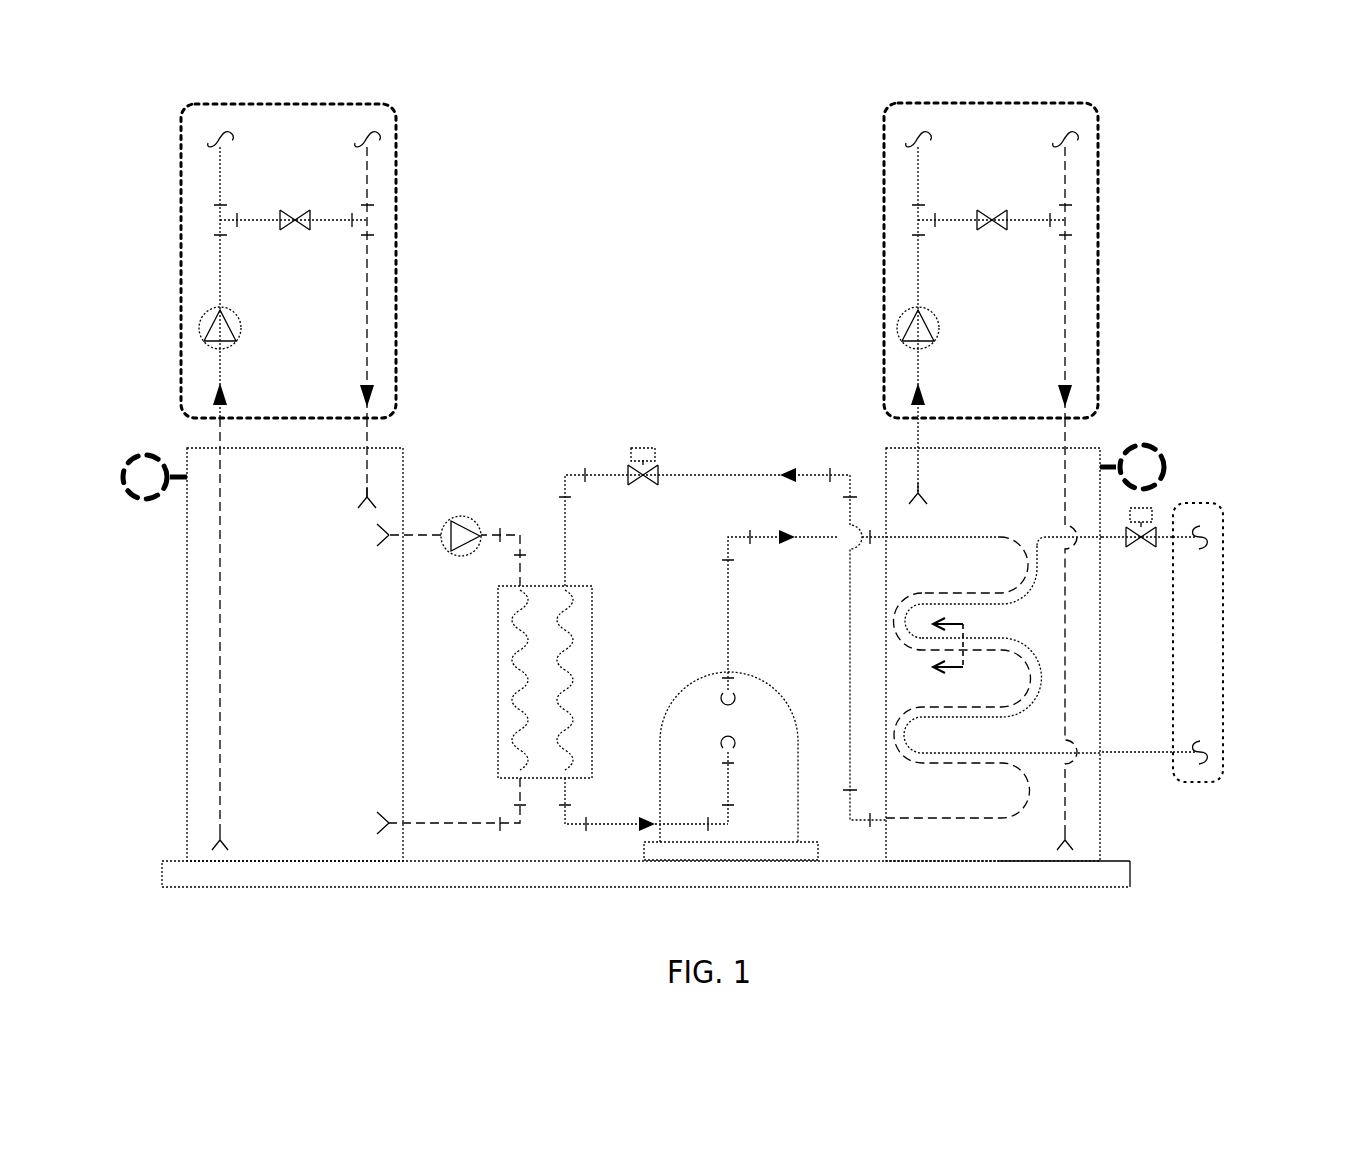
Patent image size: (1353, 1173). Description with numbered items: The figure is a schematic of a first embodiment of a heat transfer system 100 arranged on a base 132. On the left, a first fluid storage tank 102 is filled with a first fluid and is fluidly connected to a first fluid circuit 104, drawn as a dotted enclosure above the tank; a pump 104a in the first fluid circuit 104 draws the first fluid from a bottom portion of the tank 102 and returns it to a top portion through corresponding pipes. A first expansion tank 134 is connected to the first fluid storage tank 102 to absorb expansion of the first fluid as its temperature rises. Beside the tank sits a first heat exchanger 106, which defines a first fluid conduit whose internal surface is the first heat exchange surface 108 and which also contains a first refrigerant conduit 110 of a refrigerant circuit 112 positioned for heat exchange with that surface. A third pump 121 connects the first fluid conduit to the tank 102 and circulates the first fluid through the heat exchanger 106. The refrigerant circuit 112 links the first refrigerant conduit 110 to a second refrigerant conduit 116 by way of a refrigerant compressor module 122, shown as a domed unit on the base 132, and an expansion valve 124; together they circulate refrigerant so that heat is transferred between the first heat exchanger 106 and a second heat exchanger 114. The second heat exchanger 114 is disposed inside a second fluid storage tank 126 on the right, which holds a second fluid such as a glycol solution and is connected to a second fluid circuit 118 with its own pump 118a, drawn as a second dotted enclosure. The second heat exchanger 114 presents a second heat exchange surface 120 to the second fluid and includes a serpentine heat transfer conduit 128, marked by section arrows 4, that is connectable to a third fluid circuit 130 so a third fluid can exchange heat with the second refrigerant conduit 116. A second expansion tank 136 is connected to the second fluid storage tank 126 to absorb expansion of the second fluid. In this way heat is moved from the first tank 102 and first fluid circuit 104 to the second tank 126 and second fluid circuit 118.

The heat transfer system 100 is at (192, 82).
The first fluid storage tank 102 is at (279, 842).
The first fluid circuit 104 is at (233, 104).
The pump 104a is at (208, 327).
The first heat exchanger 106 is at (525, 597).
The first heat exchange surface 108 is at (515, 680).
The first refrigerant conduit 110 is at (570, 725).
The refrigerant circuit 112 is at (537, 472).
The second heat exchanger 114 is at (958, 569).
The second refrigerant conduit 116 is at (947, 537).
The second fluid circuit 118 is at (917, 104).
The pump 118a is at (942, 328).
The second heat exchange surface 120 is at (913, 522).
The third pump 121 is at (461, 548).
The refrigerant compressor module 122 is at (747, 825).
The expansion valve 124 is at (631, 485).
The second fluid storage tank 126 is at (910, 842).
The heat transfer conduit 128 is at (947, 752).
The third fluid circuit 130 is at (1223, 642).
The base 132 is at (1093, 866).
The first expansion tank 134 is at (166, 457).
The second expansion tank 136 is at (1160, 452).
The section line 4- 4 is at (938, 641).